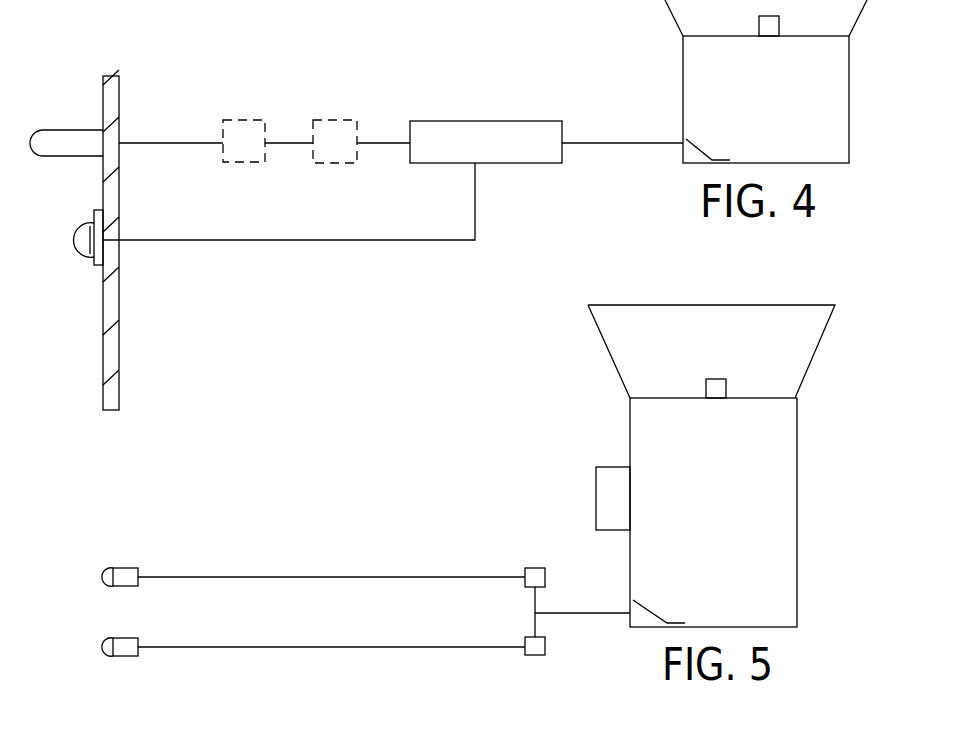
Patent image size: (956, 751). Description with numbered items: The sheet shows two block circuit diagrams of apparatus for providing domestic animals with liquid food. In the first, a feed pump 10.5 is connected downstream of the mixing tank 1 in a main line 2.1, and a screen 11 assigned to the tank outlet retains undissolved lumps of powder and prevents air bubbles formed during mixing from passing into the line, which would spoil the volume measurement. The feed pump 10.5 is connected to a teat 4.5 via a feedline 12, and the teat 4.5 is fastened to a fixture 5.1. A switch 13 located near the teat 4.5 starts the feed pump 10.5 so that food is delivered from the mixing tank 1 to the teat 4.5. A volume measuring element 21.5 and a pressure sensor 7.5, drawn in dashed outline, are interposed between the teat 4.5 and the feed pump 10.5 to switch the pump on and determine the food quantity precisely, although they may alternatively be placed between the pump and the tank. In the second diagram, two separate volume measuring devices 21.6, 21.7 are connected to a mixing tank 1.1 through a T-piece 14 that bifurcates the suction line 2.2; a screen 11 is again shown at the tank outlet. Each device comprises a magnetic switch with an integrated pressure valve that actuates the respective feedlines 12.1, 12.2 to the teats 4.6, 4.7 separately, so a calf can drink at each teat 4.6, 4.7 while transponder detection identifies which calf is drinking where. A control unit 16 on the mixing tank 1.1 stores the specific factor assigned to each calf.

In FIG. 4, the mixing tank 1 is at (697, 78).
In FIG. 5, the mixing tank 1.1 is at (783, 490).
In FIG. 4, the main line 2.1 is at (603, 140).
In FIG. 5, the suction line 2.2 is at (580, 612).
In FIG. 4, the teat 4.5 is at (61, 138).
In FIG. 5, the teat 4.6 is at (112, 578).
In FIG. 5, the teat 4.7 is at (115, 650).
In FIG. 4, the fixture 5.1 is at (119, 326).
In FIG. 4, the pressure sensor 7.5 is at (236, 130).
In FIG. 4, the feed pump 10.5 is at (483, 140).
In FIG. 4, the screen 11 is at (700, 145).
In FIG. 5, the screen 11 is at (640, 605).
In FIG. 4, the feedline 12 is at (375, 140).
In FIG. 5, the feedline 12.1 is at (312, 577).
In FIG. 5, the feedline 12.2 is at (327, 648).
In FIG. 4, the switch 13 is at (86, 245).
In FIG. 5, the T-piece 14 is at (537, 620).
In FIG. 5, the control unit 16 is at (618, 480).
In FIG. 4, the volume measuring element 21.5 is at (332, 133).
In FIG. 5, the volume measuring device 21.6 is at (537, 575).
In FIG. 5, the volume measuring device 21.7 is at (535, 655).